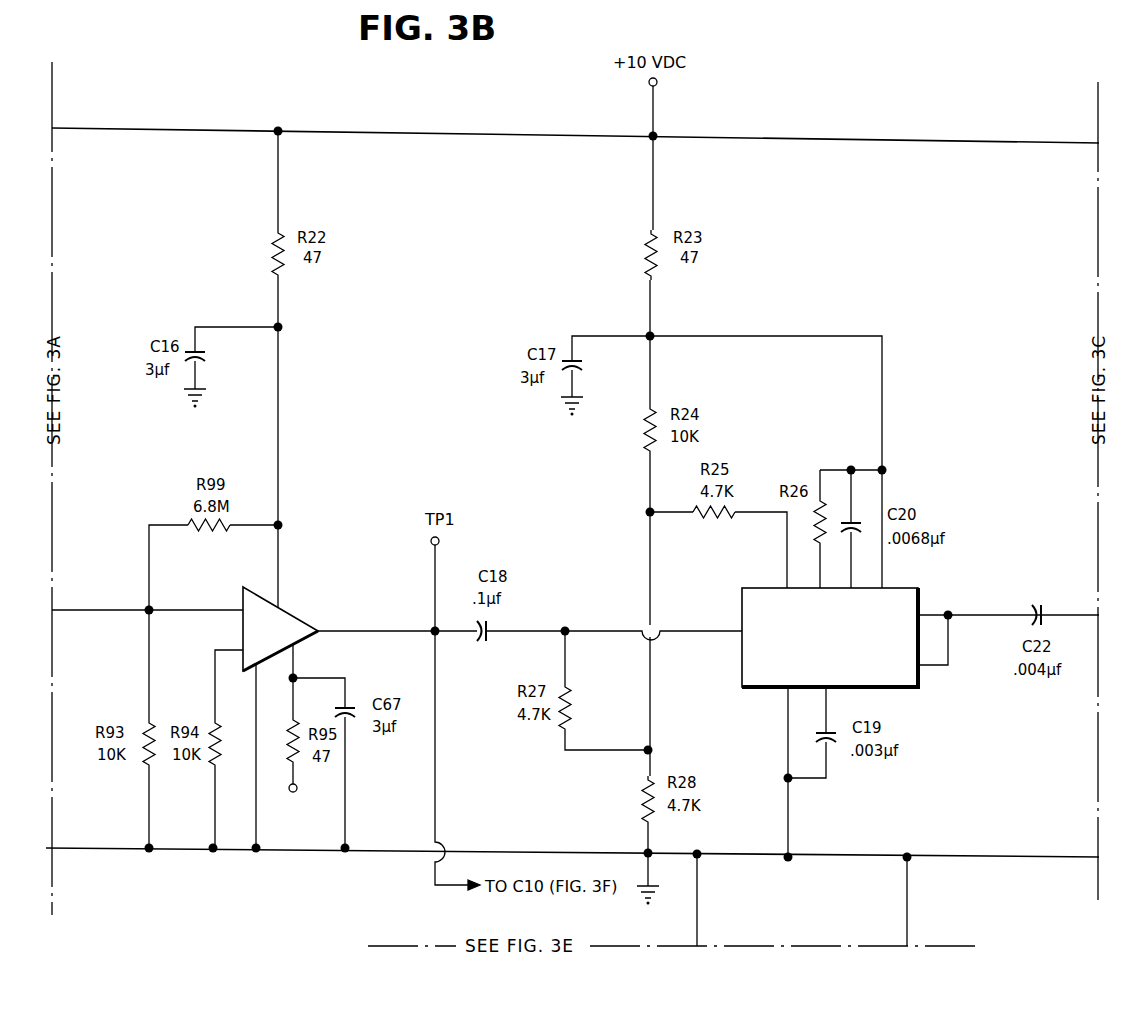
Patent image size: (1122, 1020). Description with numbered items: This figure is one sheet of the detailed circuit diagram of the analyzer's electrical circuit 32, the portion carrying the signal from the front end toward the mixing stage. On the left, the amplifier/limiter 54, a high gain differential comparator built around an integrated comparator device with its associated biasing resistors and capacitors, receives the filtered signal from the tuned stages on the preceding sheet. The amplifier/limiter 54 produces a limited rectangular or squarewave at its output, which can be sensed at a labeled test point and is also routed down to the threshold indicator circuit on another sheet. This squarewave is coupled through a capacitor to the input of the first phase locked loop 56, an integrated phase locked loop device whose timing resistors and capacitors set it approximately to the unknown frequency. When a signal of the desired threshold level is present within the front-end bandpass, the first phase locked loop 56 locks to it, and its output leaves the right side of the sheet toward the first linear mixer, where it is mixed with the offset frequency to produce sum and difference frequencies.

The electrical circuit 32 is at (203, 116).
The amplifier/limiter 54 is at (308, 594).
The first phase locked loop 56 is at (934, 586).